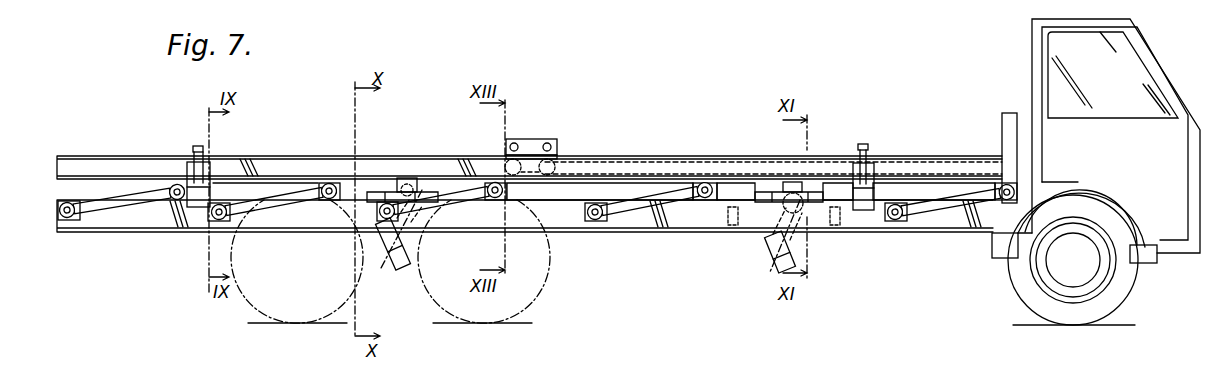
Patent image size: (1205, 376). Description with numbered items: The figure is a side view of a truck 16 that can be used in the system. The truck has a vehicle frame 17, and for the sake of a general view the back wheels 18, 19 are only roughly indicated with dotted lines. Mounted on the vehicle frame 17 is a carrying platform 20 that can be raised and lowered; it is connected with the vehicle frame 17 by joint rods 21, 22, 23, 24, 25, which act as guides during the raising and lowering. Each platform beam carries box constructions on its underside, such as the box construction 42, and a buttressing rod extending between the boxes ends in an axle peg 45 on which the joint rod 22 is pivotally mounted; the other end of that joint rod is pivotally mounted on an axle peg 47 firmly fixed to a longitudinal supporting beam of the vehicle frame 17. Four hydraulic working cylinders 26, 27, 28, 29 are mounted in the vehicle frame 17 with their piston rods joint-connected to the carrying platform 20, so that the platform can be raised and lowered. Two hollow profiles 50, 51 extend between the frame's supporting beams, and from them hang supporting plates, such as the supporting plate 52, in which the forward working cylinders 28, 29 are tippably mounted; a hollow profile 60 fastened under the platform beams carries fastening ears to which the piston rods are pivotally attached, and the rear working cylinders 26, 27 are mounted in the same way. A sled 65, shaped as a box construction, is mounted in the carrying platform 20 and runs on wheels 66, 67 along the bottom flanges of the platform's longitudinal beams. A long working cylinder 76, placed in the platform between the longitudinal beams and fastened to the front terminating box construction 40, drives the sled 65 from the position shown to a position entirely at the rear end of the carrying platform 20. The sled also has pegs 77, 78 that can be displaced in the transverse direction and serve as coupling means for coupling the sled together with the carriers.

The truck 16 is at (1032, 40).
The vehicle frame 17 is at (683, 217).
The back wheel 18 is at (236, 302).
The back wheel 19 is at (540, 290).
The carrying platform 20 is at (907, 157).
The joint rod 21 is at (107, 205).
The joint rod 22 is at (282, 203).
The joint rod 23 is at (457, 198).
The joint rod 24 is at (617, 217).
The joint rod 25 is at (945, 207).
The hydraulic working cylinder 26 is at (404, 251).
The hydraulic working cylinder 27 is at (388, 258).
The hydraulic working cylinder 28 is at (765, 252).
The hydraulic working cylinder 29 is at (770, 270).
The box construction 40 is at (1002, 135).
The box construction 42 is at (323, 182).
The axle peg 45 is at (335, 188).
The axle peg 47 is at (210, 213).
The hollow profile 50 is at (763, 198).
The hollow profile 51 is at (817, 198).
The supporting plate 52 is at (800, 200).
The hollow profile 60 is at (791, 182).
The sled 65 is at (530, 140).
The wheel 66 is at (506, 165).
The wheel 67 is at (560, 166).
The working cylinder 76 is at (637, 168).
The peg 77 is at (515, 142).
The peg 78 is at (553, 140).